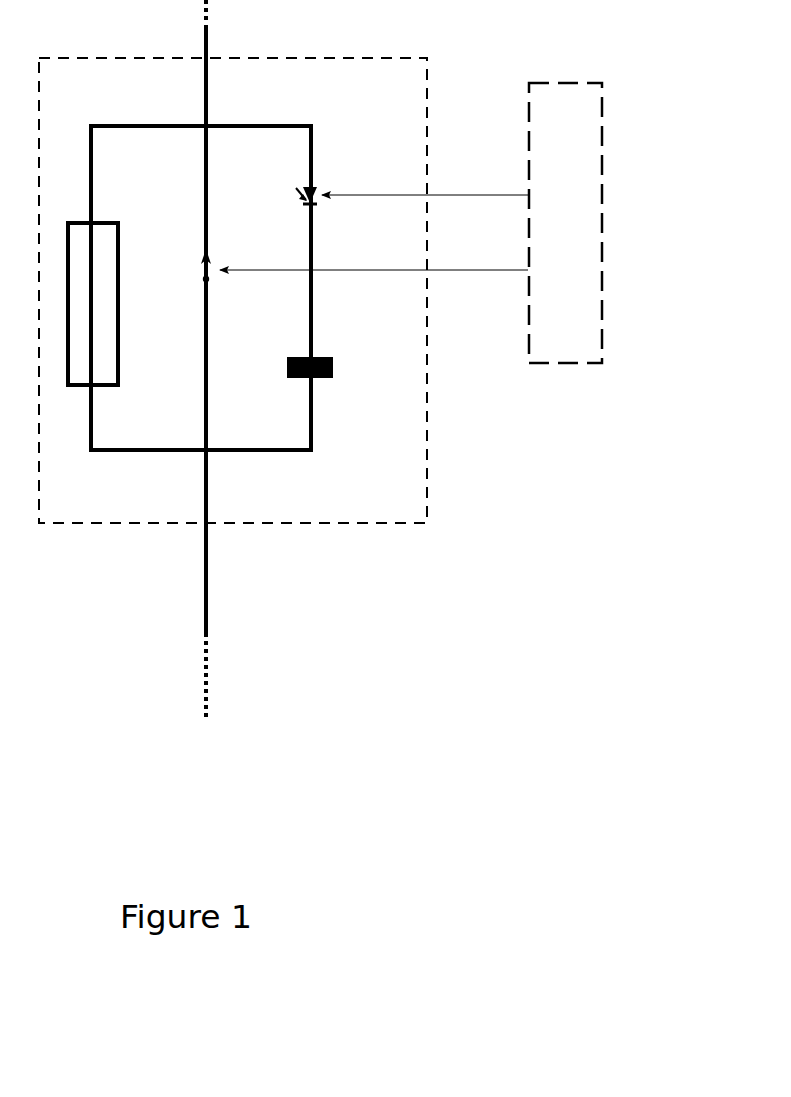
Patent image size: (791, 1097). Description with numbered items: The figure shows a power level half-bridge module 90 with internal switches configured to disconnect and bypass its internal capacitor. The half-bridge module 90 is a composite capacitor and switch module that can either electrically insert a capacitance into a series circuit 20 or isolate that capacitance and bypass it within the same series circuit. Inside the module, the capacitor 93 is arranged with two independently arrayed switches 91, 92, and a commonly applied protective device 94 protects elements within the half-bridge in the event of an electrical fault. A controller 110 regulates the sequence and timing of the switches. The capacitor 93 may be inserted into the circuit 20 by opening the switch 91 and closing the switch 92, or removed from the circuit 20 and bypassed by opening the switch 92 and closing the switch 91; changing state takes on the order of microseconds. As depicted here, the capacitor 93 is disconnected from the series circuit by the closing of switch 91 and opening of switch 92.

The circuit 20 is at (206, 549).
The half-bridge module 90 is at (429, 71).
The switch 91 is at (199, 281).
The switch 92 is at (300, 185).
The capacitor 93 is at (300, 357).
The protective device 94 is at (118, 223).
The controller 110 is at (575, 83).